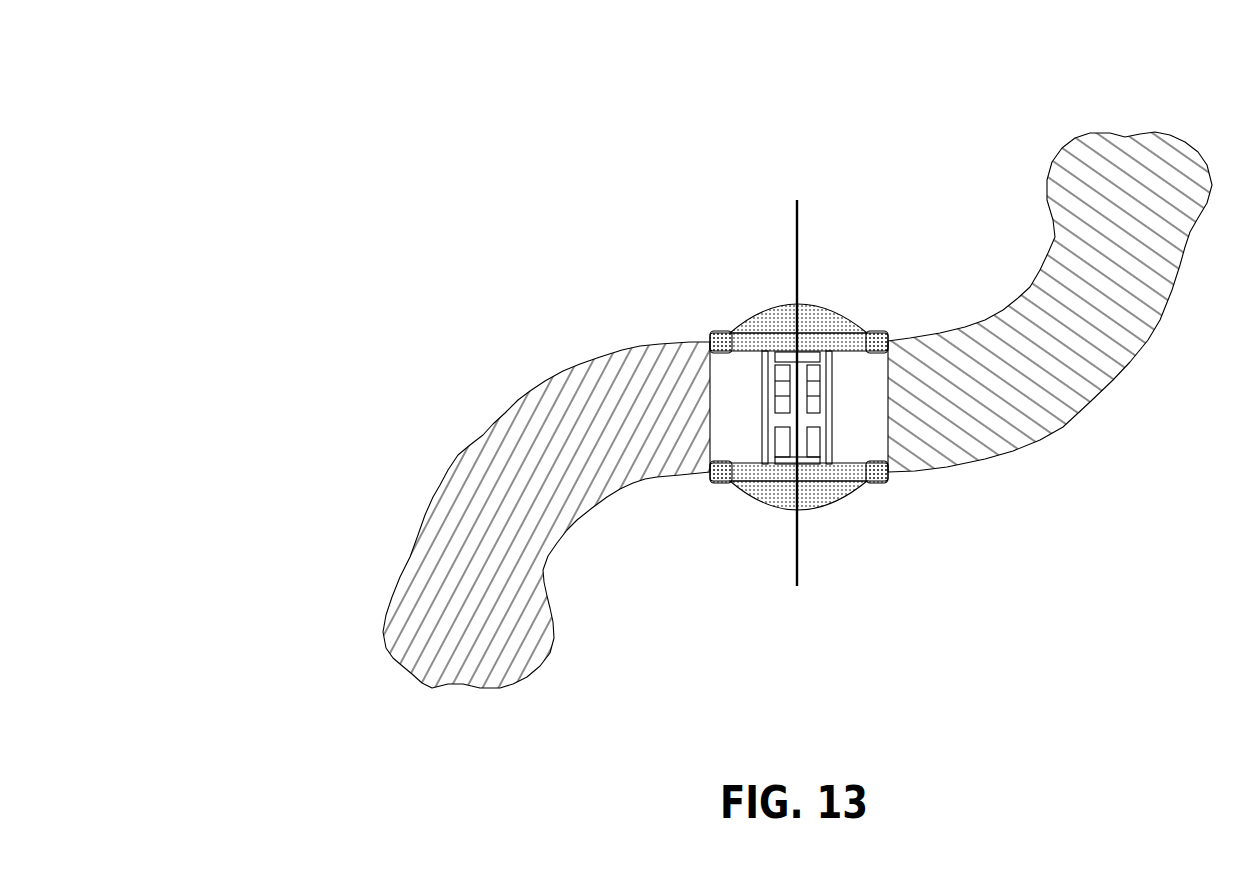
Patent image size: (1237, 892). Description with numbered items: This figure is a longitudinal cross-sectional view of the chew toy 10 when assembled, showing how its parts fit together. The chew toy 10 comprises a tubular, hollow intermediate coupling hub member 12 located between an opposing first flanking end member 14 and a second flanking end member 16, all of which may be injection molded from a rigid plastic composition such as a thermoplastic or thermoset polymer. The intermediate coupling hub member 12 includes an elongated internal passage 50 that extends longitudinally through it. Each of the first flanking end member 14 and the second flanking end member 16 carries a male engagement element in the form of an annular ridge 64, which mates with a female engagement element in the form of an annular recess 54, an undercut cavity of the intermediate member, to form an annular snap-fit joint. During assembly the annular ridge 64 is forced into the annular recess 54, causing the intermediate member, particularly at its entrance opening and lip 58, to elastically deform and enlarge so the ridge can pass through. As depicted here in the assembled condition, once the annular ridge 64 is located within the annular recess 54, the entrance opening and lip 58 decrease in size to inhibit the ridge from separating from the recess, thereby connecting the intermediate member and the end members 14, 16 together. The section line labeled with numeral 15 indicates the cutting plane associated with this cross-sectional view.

The chew toy 10 is at (310, 100).
The intermediate coupling hub member 12 is at (747, 327).
The first flanking end member 14 is at (533, 343).
The section line for FIGS. 14 and 15 is at (797, 200).
The second flanking end member 16 is at (1053, 482).
The internal passage 50 is at (803, 456).
The annular recess 54 is at (847, 345).
The lip 58 is at (712, 343).
The annular ridge 64 is at (867, 470).